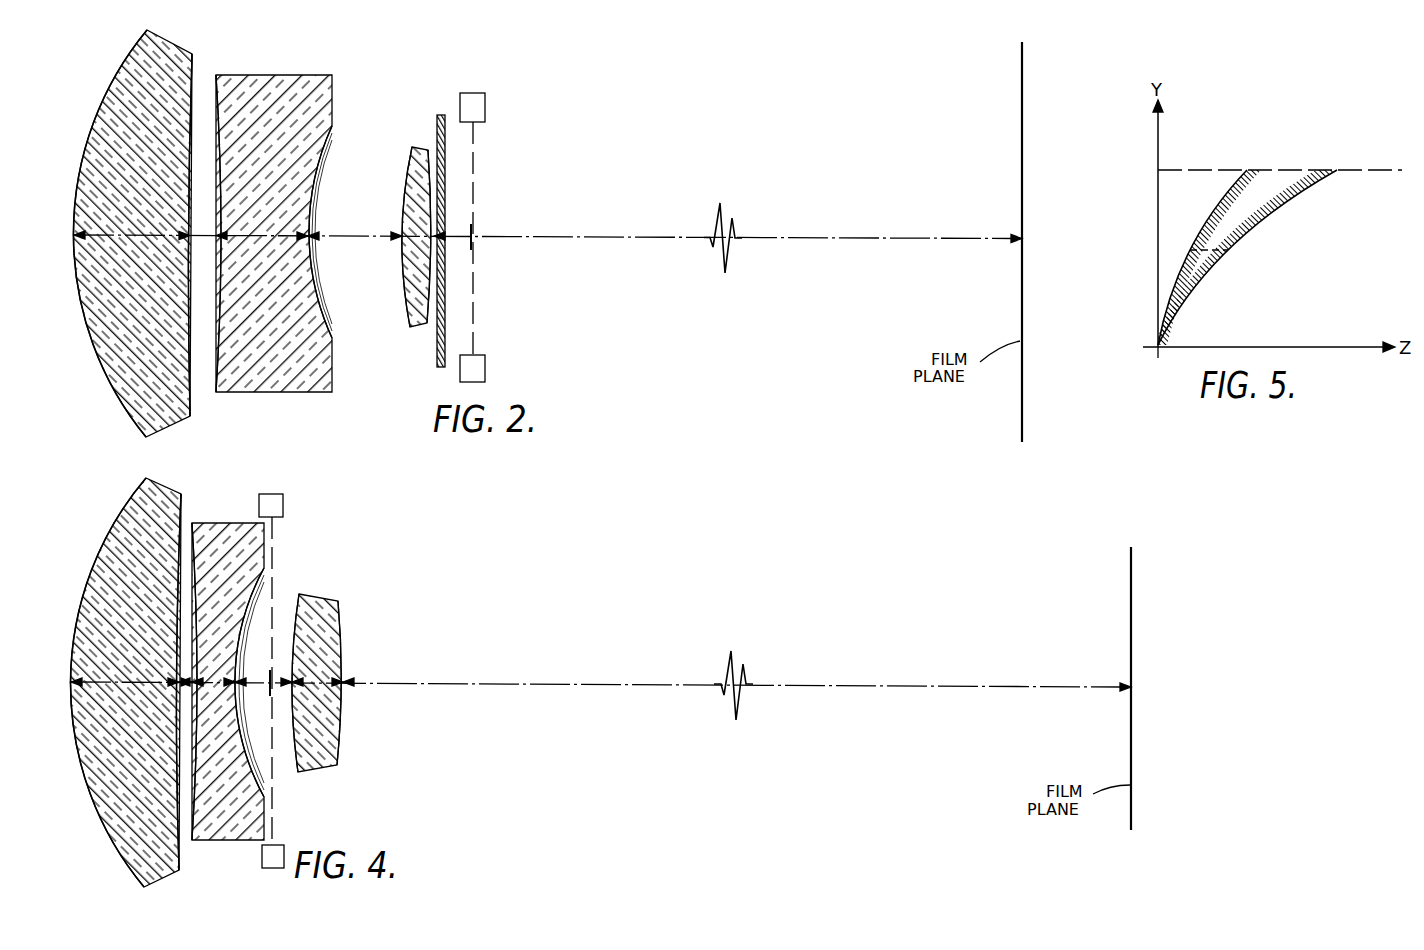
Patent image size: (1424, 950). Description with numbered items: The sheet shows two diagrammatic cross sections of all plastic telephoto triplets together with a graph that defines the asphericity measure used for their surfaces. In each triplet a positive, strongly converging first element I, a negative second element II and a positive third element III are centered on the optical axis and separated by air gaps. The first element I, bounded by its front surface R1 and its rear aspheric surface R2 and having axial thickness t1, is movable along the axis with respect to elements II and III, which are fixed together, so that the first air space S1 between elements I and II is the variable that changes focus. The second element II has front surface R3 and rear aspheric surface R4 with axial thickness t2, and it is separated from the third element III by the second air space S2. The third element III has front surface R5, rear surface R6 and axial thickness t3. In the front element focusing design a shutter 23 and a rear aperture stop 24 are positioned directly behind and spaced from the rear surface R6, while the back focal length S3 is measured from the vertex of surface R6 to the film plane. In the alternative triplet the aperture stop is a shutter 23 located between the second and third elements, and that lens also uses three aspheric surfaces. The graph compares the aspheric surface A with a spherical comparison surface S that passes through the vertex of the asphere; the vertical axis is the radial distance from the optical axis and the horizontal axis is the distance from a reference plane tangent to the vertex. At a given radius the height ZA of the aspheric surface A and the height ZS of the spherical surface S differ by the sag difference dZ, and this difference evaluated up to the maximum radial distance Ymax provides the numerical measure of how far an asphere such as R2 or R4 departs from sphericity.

In FIG. 2, the first element I is at (171, 40).
In FIG. 4, the first element I is at (153, 481).
In FIG. 2, the second element II is at (263, 78).
In FIG. 4, the second element II is at (215, 520).
In FIG. 2, the third element III is at (417, 146).
In FIG. 4, the third element III is at (308, 595).
In FIG. 2, the front surface of the first element R1 is at (106, 96).
In FIG. 4, the front surface of the first element R1 is at (119, 518).
In FIG. 2, the rear aspheric surface of the first element R2 is at (195, 74).
In FIG. 4, the rear aspheric surface of the first element R2 is at (180, 529).
In FIG. 2, the front surface of the second element R3 is at (216, 345).
In FIG. 4, the front surface of the second element R3 is at (191, 797).
In FIG. 2, the rear aspheric surface of the second element R4 is at (323, 344).
In FIG. 4, the rear aspheric surface of the second element R4 is at (252, 770).
In FIG. 2, the front surface of the third element R5 is at (407, 163).
In FIG. 4, the front surface of the third element R5 is at (296, 605).
In FIG. 2, the rear surface of the third element R6 is at (433, 313).
In FIG. 4, the rear surface of the third element R6 is at (340, 613).
In FIG. 2, the thickness of the first element t1 is at (121, 237).
In FIG. 4, the thickness of the first element t1 is at (115, 683).
In FIG. 2, the thickness of the second element t2 is at (261, 237).
In FIG. 4, the thickness of the second element t2 is at (218, 683).
In FIG. 2, the thickness of the third element t3 is at (418, 239).
In FIG. 4, the thickness of the third element t3 is at (315, 684).
In FIG. 2, the first air space S1 is at (206, 235).
In FIG. 4, the first air space S1 is at (179, 674).
In FIG. 2, the second air space S2 is at (358, 237).
In FIG. 4, the second air space S2 is at (259, 674).
In FIG. 2, the back focal length S3 is at (581, 240).
In FIG. 4, the back focal length S3 is at (640, 687).
In FIG. 2, the shutter 23 is at (473, 163).
In FIG. 4, the shutter 23 is at (278, 556).
In FIG. 2, the rear aperture stop 24 is at (442, 113).
In FIG. 5, the aspheric surface A is at (1217, 207).
In FIG. 5, the spherical comparison surface S is at (1277, 210).
In FIG. 5, the height of the aspheric surface ZA is at (1190, 250).
In FIG. 5, the height of the spherical surface ZS is at (1228, 250).
In FIG. 5, the sag difference dZ is at (1208, 250).
In FIG. 5, the maximum radial distance Ymax is at (1377, 170).